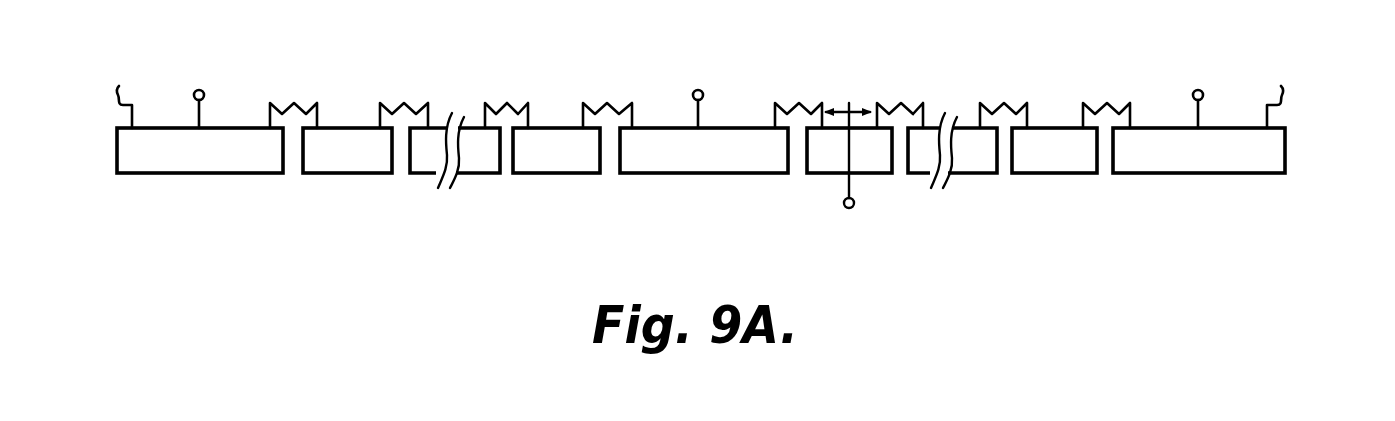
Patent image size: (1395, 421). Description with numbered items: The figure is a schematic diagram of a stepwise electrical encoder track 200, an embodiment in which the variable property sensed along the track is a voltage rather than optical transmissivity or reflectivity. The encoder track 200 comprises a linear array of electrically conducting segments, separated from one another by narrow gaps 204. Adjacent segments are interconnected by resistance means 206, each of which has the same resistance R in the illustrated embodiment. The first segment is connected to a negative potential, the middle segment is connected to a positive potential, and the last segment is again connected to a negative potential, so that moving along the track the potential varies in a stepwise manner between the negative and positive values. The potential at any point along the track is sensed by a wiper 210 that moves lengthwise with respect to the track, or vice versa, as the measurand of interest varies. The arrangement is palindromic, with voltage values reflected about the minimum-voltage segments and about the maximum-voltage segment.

The encoder track 200 is at (184, 47).
The gap 204 is at (401, 176).
The resistance means 206 is at (425, 98).
The wiper 210 is at (853, 183).